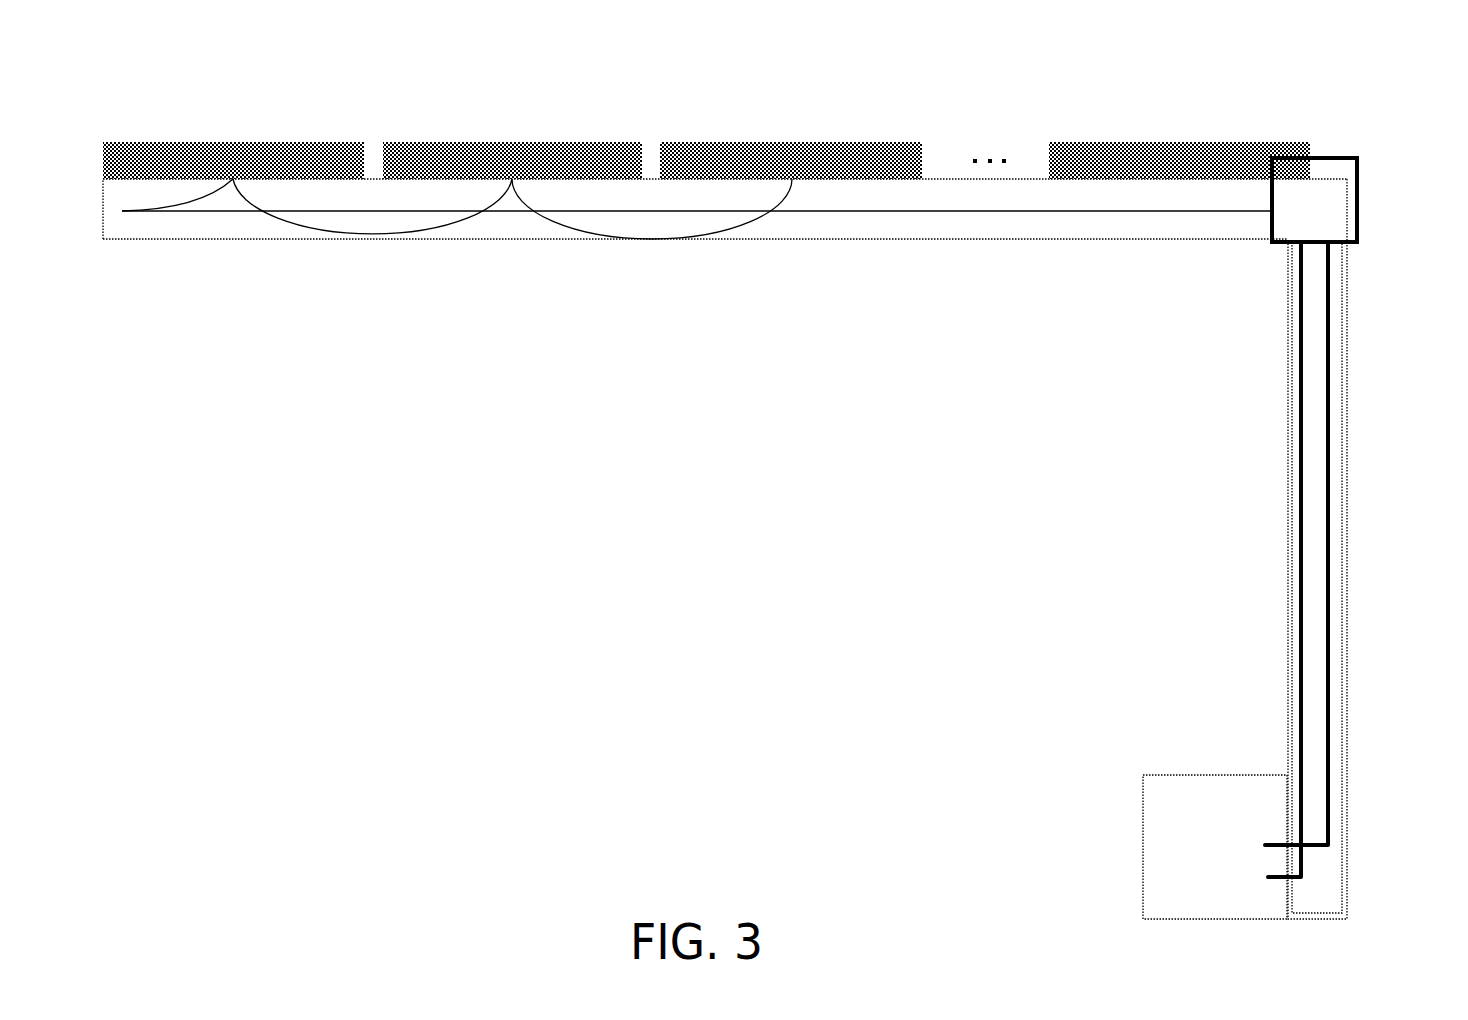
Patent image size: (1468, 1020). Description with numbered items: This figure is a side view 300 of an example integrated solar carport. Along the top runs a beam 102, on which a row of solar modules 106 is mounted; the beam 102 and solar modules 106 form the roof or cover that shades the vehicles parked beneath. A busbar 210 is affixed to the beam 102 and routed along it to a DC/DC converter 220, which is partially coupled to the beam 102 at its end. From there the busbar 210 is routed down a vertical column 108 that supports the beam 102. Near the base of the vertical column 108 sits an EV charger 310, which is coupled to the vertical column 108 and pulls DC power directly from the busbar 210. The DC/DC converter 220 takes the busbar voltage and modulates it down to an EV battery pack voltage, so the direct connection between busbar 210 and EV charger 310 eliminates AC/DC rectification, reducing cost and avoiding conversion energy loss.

The side view 300 is at (245, 100).
The solar modules 106 is at (697, 142).
The beam 102 is at (790, 240).
The DC/DC converter 220 is at (1330, 157).
The vertical column 108 is at (1287, 660).
The busbar 210 is at (1292, 478).
The EV charger 310 is at (1237, 860).